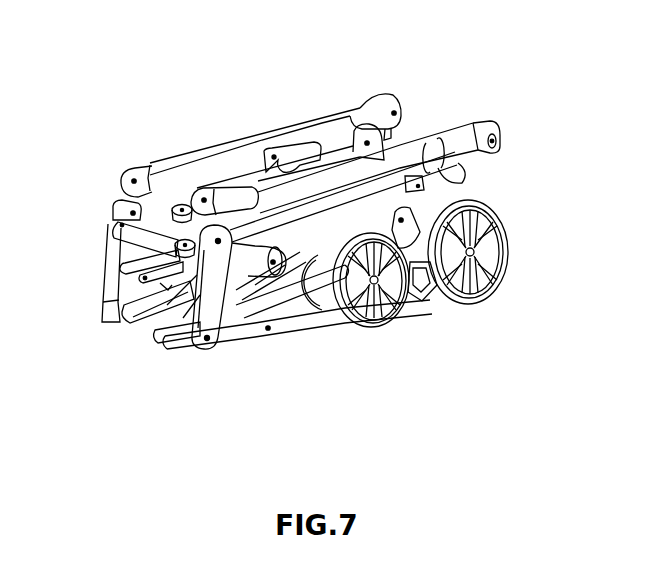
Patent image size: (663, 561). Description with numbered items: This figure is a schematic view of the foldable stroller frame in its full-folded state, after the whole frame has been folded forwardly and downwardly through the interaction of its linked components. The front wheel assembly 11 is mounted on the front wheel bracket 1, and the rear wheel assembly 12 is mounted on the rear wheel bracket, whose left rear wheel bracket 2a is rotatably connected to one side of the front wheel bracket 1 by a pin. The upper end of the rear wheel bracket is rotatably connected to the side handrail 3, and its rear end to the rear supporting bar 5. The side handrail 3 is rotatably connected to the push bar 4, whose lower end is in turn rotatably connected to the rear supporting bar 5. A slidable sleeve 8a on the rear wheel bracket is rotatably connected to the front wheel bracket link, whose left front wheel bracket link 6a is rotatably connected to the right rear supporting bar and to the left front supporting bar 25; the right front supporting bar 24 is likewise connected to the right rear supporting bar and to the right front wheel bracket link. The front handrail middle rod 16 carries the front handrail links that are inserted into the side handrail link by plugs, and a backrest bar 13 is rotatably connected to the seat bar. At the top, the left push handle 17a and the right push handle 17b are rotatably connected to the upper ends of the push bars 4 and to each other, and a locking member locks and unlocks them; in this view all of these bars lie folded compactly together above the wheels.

The front wheel bracket 1 is at (283, 327).
The left rear wheel bracket 2a is at (217, 273).
The side handrail 3 is at (373, 187).
The push bar 4 is at (283, 138).
The rear supporting bar 5 is at (457, 160).
The left front wheel bracket link 6a is at (268, 305).
The slidable sleeve 8a is at (428, 283).
The front wheel assembly 11 is at (362, 310).
The rear wheel assembly 12 is at (497, 243).
The backrest bar 13 is at (125, 270).
The front handrail middle rod 16 is at (182, 245).
The left push handle 17a is at (242, 183).
The right push handle 17b is at (195, 178).
The right front supporting bar 24 is at (138, 312).
The left front supporting bar 25 is at (170, 343).